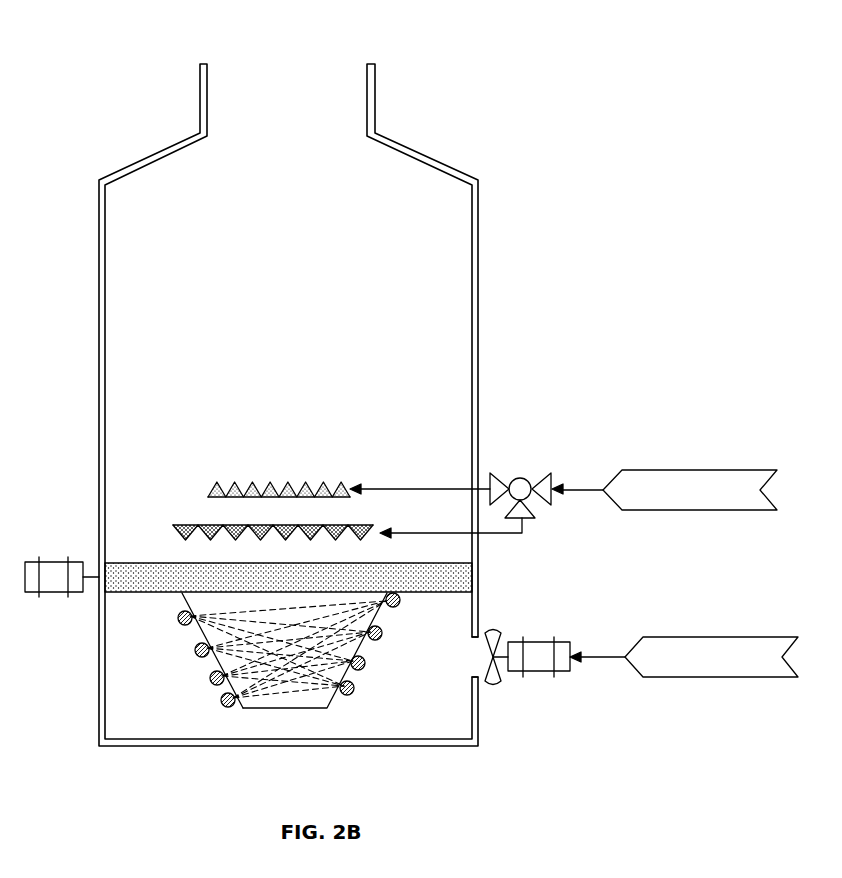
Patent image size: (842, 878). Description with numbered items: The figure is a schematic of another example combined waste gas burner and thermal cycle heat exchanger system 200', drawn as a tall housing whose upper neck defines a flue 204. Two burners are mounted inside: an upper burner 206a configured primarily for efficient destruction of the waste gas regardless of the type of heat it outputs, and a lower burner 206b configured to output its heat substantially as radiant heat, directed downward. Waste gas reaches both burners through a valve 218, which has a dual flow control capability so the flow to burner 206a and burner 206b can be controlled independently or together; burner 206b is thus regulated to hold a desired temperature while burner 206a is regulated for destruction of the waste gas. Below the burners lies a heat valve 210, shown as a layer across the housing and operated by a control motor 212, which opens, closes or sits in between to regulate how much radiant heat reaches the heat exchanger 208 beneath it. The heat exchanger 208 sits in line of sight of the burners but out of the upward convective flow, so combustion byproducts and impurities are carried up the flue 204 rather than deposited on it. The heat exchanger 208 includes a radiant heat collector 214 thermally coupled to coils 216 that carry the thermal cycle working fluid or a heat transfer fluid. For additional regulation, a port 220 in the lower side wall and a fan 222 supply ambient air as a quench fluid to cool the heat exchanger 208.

The thermal cycle generator system 200' is at (425, 341).
The flue 204 is at (307, 124).
The burner 206a is at (343, 484).
The burner 206b is at (345, 529).
The heat exchanger 208 is at (397, 632).
The heat valve 210 is at (128, 593).
The control motor 212 is at (57, 562).
The radiant heat collector 214 is at (182, 600).
The coils 216 is at (210, 677).
The valve 218 is at (520, 477).
The port 220 is at (470, 667).
The fan 222 is at (500, 678).